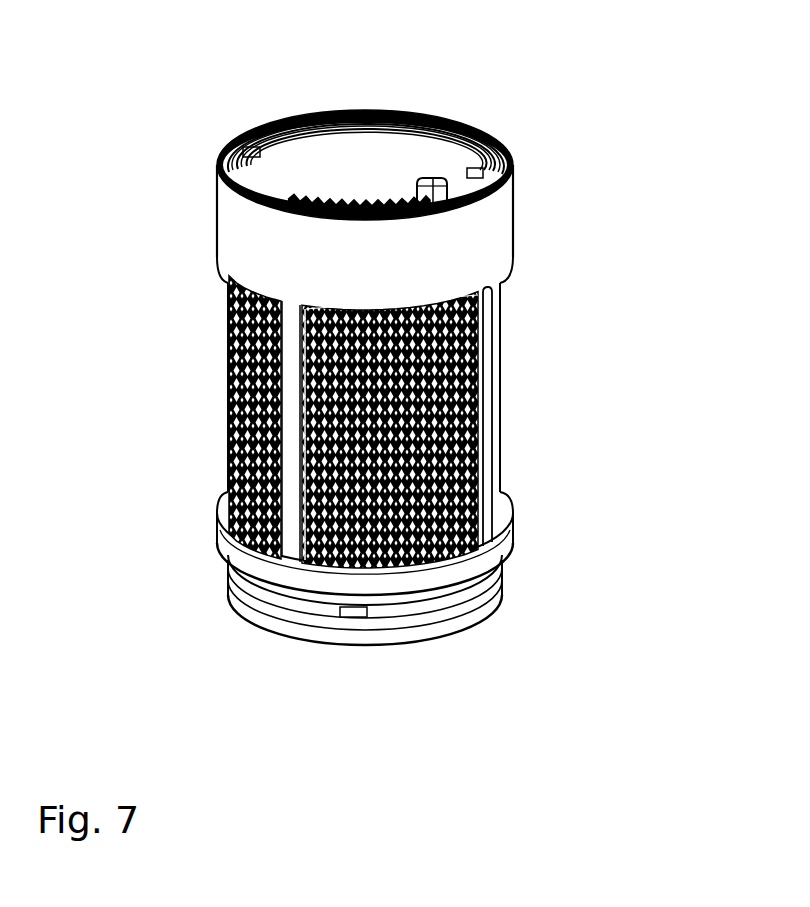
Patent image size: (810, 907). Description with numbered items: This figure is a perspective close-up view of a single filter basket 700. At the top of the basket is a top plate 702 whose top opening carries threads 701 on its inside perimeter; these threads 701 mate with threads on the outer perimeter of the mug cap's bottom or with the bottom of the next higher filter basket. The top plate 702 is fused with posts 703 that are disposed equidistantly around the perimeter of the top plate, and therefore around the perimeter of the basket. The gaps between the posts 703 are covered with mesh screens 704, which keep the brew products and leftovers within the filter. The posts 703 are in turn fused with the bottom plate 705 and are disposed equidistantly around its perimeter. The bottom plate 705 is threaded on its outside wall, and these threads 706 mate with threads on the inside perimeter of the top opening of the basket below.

The filter basket 700 is at (209, 112).
The threads 701 is at (397, 133).
The top plate 702 is at (490, 240).
The posts 703 is at (496, 363).
The mesh screens 704 is at (480, 444).
The bottom plate 705 is at (488, 558).
The threads 706 is at (458, 622).